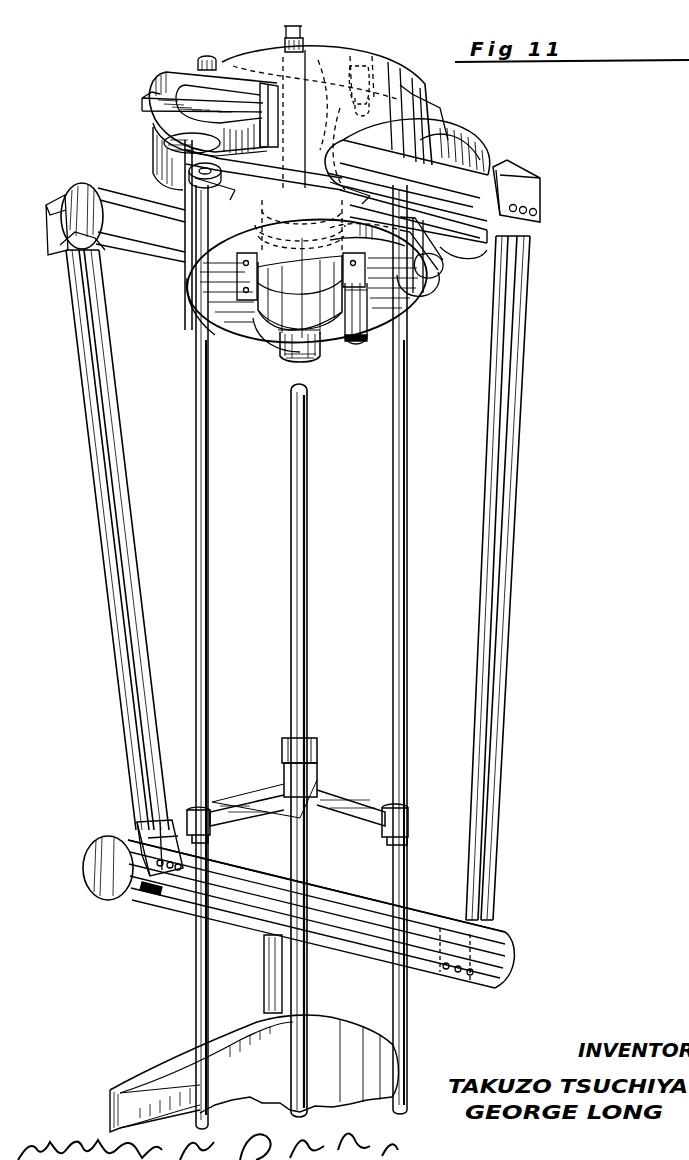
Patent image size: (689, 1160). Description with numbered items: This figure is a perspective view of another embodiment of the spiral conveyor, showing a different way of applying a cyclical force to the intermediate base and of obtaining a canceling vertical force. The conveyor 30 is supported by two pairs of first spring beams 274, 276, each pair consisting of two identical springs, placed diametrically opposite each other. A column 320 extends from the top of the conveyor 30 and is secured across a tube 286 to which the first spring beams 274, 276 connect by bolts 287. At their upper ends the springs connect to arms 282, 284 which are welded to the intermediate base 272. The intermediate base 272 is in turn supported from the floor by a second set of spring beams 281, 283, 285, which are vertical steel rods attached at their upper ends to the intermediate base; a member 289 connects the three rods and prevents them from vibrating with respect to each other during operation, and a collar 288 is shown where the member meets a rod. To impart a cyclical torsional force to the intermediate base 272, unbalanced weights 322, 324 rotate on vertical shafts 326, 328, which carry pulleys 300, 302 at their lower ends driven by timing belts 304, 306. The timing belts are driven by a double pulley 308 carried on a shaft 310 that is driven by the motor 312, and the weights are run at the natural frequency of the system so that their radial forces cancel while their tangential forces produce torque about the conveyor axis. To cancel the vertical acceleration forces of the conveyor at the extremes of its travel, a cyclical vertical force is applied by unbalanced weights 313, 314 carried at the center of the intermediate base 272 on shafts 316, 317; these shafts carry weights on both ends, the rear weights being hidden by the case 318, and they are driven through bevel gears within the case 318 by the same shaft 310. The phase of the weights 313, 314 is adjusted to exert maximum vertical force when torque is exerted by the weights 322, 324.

The conveyor 30 is at (371, 1048).
The intermediate base 272 is at (194, 305).
The first spring beam 274 is at (510, 484).
The first spring beam 276 is at (102, 542).
The second spring beam 281 is at (303, 640).
The arm 282 is at (175, 262).
The second spring beam 283 is at (402, 610).
The arm 284 is at (470, 190).
The second spring beam 285 is at (204, 666).
The tube 286 is at (135, 900).
The bolt 287 is at (170, 886).
The rod collar 288 is at (386, 884).
The member 289 is at (270, 796).
The pulley 300 is at (189, 172).
The pulley 302 is at (420, 284).
The timing belt 304 is at (250, 196).
The timing belt 306 is at (443, 270).
The double pulley 308 is at (366, 238).
The shaft 310 is at (266, 236).
The motor 312 is at (282, 350).
The unbalanced weight 313 is at (276, 36).
The unbalanced weight 314 is at (378, 74).
The shaft 316 is at (284, 52).
The shaft 317 is at (420, 110).
The case 318 is at (378, 68).
The column 320 is at (276, 985).
The unbalanced weight 322 is at (142, 99).
The unbalanced weight 324 is at (488, 250).
The vertical shaft 326 is at (200, 61).
The vertical shaft 328 is at (443, 160).